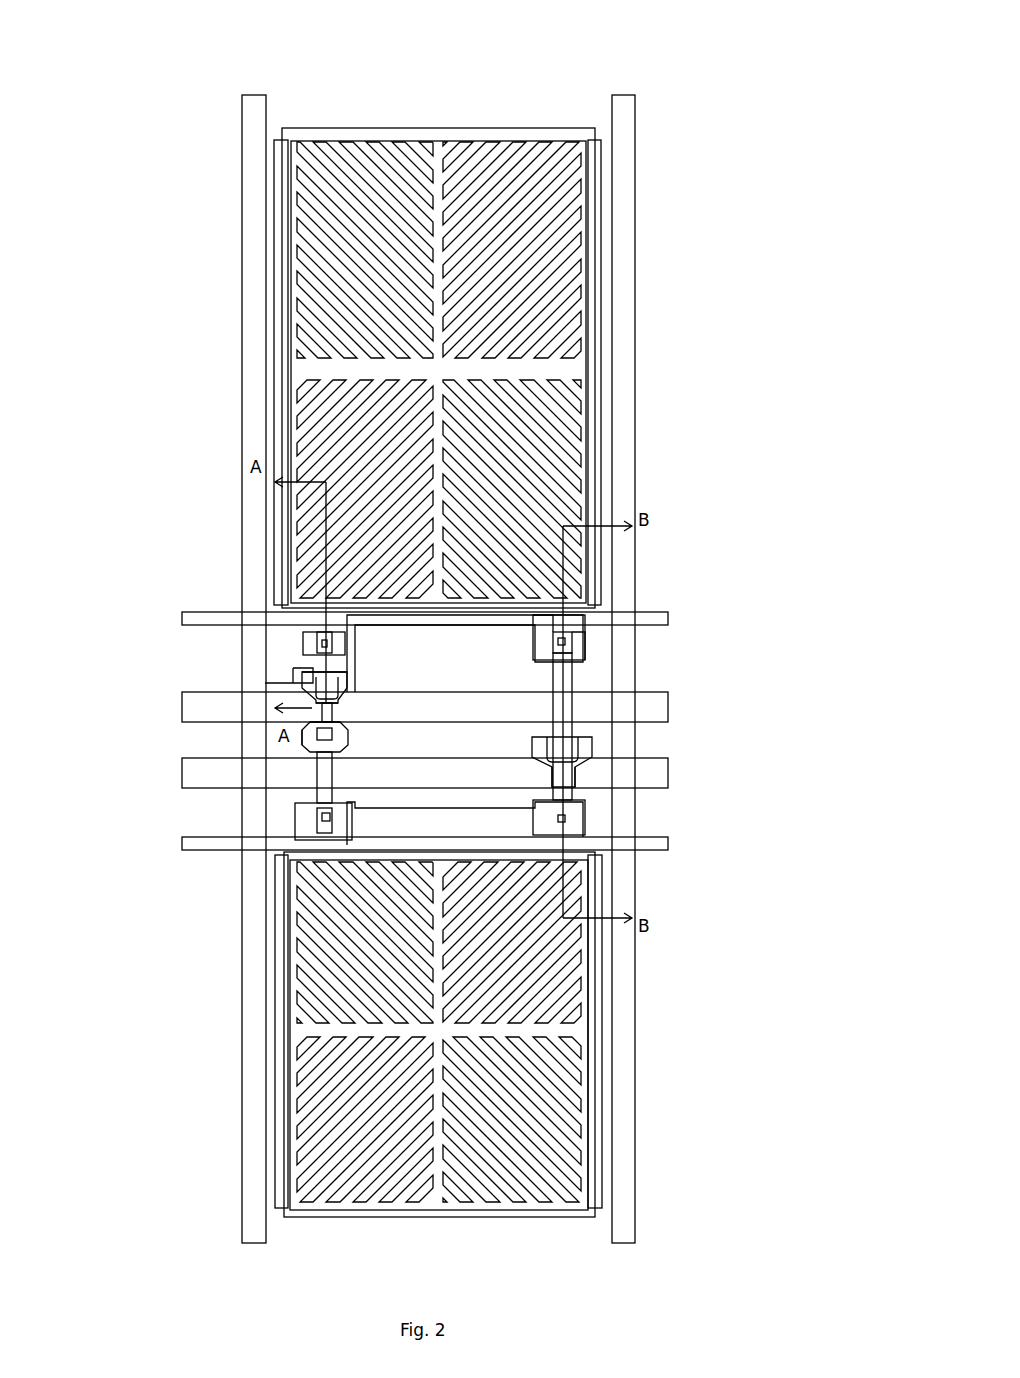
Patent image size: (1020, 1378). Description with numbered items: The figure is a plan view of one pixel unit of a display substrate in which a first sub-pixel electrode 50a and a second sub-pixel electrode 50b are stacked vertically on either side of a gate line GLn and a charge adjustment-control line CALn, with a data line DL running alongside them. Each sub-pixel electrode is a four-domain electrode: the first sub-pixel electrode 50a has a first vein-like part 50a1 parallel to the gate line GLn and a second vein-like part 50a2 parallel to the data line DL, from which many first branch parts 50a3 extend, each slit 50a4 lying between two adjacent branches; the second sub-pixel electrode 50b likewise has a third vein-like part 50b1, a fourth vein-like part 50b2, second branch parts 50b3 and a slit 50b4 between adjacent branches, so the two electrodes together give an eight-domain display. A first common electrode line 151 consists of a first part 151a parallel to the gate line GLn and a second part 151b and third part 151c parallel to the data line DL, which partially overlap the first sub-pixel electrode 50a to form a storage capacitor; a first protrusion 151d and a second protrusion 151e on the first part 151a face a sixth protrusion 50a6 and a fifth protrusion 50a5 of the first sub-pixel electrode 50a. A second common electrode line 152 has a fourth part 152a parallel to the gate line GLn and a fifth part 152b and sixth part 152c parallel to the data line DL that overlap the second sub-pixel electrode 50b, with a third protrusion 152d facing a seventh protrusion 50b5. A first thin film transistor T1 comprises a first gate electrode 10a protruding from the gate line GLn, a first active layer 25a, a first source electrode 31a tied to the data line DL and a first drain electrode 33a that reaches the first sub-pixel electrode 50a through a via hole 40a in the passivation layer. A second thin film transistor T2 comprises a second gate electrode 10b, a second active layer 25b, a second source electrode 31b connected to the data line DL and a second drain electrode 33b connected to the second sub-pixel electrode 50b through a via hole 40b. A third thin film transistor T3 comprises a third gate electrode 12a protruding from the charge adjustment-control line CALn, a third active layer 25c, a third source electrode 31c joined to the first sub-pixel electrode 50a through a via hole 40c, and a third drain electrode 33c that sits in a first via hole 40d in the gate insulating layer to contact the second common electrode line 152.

The data line DL is at (253, 95).
The fourth part 152a is at (640, 921).
The first sub-pixel electrode 50a is at (557, 127).
The first vein-like part 50a1 is at (510, 368).
The second vein-like part 50a2 is at (440, 313).
The first branch parts 50a3 is at (527, 282).
The slit 50a4 is at (550, 225).
The fifth protrusion 50a5 is at (562, 650).
The sixth protrusion 50a6 is at (355, 655).
The second sub-pixel electrode 50b is at (553, 1208).
The third vein-like part 50b1 is at (505, 1037).
The fourth vein-like part 50b2 is at (490, 1087).
The second branch parts 50b3 is at (518, 1133).
The slit 50b4 is at (533, 1170).
The seventh protrusion 50b5 is at (355, 832).
The first common electrode line 151 is at (183, 618).
The first part 151a is at (548, 627).
The second part 151b is at (276, 378).
The third part 151c is at (600, 460).
The first protrusion 151d is at (308, 672).
The second protrusion 151e is at (575, 658).
The second common electrode line 152 is at (182, 840).
The fifth part 152b is at (275, 1037).
The sixth part 152c is at (600, 1032).
The third protrusion 152d is at (325, 818).
The gate line GLn is at (182, 704).
The charge adjustment-control line CALn is at (182, 769).
The first thin film transistor T1 is at (340, 673).
The second thin film transistor T2 is at (343, 737).
The third thin film transistor T3 is at (549, 762).
The via hole 40a is at (322, 642).
The via hole 40b is at (300, 838).
The via hole 40c is at (583, 662).
The first via hole 40d is at (570, 823).
The first drain electrode 33a is at (316, 660).
The second drain electrode 33b is at (313, 830).
The third drain electrode 33c is at (565, 777).
The first gate electrode 10a is at (312, 684).
The second gate electrode 10b is at (305, 732).
The third gate electrode 12a is at (572, 742).
The first active layer 25a is at (300, 690).
The second active layer 25b is at (320, 735).
The third active layer 25c is at (577, 758).
The first source electrode 31a is at (300, 682).
The second source electrode 31b is at (330, 740).
The third source electrode 31c is at (565, 688).